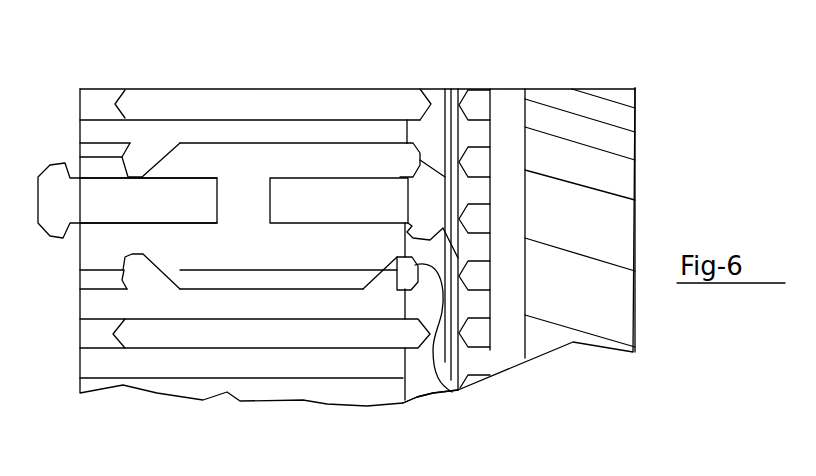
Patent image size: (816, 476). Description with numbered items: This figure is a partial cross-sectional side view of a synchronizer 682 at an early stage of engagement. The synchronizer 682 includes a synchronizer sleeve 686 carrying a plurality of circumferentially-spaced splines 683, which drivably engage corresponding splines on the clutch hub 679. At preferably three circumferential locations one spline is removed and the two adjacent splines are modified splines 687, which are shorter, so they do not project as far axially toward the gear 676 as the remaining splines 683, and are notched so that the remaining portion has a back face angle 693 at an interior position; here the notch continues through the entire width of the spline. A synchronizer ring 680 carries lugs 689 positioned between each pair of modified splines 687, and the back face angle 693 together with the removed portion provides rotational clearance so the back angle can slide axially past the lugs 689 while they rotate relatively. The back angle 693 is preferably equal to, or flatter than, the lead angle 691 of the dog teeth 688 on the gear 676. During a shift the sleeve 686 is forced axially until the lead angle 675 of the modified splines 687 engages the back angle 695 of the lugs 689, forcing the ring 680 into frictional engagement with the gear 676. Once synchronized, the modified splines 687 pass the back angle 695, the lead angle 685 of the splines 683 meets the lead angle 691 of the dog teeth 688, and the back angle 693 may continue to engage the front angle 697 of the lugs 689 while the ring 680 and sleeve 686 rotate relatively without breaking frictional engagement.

The lead angle of the modified splines 675 is at (453, 393).
The gear 676 is at (607, 173).
The clutch hub 679 is at (97, 135).
The synchronizer ring 680 is at (418, 355).
The synchronizer 682 is at (150, 68).
The splines 683 is at (308, 104).
The lead angle of the splines 685 is at (427, 97).
The synchronizer sleeve 686 is at (230, 108).
The modified splines 687 is at (398, 278).
The dog teeth 688 is at (475, 102).
The lugs 689 is at (392, 210).
The lead angle of the dog teeth 691 is at (456, 88).
The back face angle 693 is at (397, 257).
The back angle of the lugs 695 is at (407, 232).
The front angle of the lugs 697 is at (490, 290).